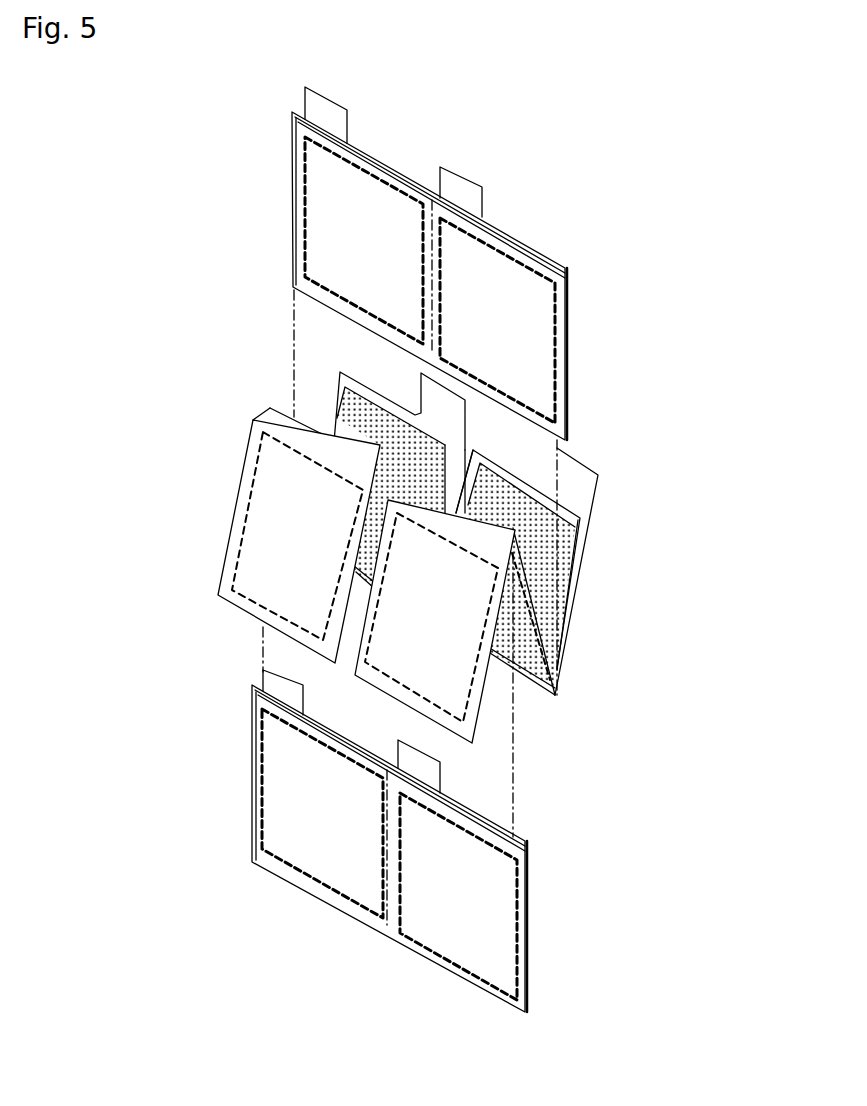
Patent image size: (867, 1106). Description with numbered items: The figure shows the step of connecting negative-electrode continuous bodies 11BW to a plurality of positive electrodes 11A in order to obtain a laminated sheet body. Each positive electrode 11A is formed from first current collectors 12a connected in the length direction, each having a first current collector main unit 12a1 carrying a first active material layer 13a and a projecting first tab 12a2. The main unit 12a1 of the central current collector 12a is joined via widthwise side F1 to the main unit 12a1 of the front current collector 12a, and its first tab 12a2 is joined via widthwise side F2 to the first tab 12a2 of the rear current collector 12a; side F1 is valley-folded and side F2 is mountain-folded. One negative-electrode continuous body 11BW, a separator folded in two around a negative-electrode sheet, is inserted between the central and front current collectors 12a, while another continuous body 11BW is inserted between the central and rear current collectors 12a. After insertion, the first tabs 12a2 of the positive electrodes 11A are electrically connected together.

The negative-electrode continuous body 11BW is at (721, 362).
The positive electrode 11A is at (225, 547).
The first current collector 12a is at (583, 467).
The first current collector main unit 12a1 is at (575, 549).
The first tab 12a2 is at (584, 483).
The first active material layer 13a is at (566, 588).
The widthwise side F1 is at (563, 662).
The widthwise side F2 is at (493, 514).